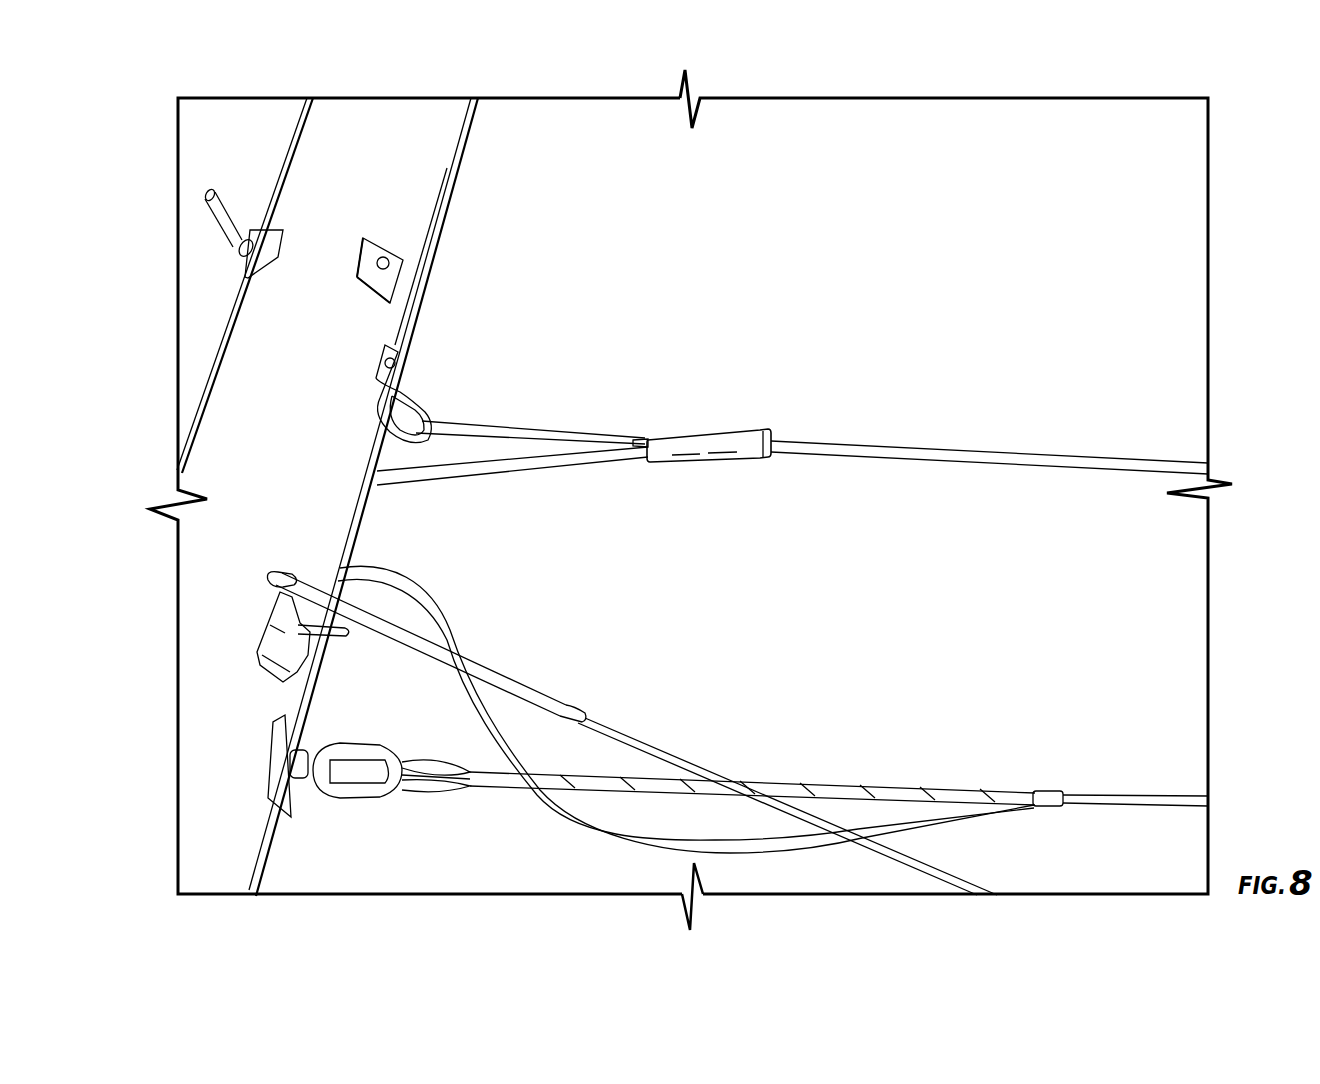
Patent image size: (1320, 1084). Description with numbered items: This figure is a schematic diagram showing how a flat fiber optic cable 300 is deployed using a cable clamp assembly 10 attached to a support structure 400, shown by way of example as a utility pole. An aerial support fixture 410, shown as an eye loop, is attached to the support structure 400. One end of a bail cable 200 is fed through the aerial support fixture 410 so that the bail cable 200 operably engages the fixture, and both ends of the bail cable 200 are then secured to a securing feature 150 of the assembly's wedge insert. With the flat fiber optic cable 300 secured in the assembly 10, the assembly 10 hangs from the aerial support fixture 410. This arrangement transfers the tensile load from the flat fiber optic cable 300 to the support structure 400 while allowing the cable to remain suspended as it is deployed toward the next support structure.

The assembly 10 is at (713, 432).
The securing feature 150 is at (642, 438).
The bail cable 200 is at (580, 437).
The flat fiber optic cable 300 is at (457, 465).
The support structure 400 is at (423, 203).
The aerial support fixture 410 is at (420, 405).